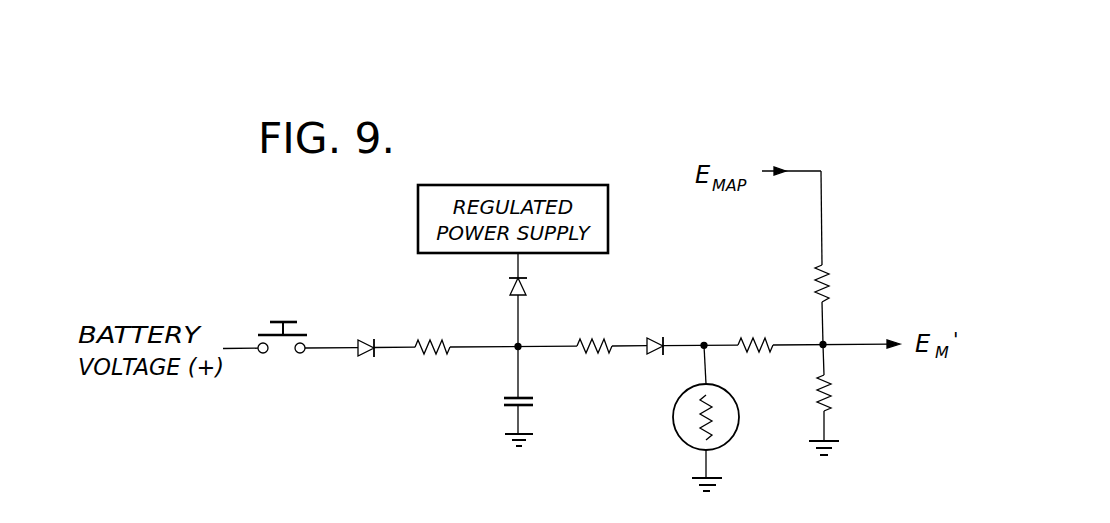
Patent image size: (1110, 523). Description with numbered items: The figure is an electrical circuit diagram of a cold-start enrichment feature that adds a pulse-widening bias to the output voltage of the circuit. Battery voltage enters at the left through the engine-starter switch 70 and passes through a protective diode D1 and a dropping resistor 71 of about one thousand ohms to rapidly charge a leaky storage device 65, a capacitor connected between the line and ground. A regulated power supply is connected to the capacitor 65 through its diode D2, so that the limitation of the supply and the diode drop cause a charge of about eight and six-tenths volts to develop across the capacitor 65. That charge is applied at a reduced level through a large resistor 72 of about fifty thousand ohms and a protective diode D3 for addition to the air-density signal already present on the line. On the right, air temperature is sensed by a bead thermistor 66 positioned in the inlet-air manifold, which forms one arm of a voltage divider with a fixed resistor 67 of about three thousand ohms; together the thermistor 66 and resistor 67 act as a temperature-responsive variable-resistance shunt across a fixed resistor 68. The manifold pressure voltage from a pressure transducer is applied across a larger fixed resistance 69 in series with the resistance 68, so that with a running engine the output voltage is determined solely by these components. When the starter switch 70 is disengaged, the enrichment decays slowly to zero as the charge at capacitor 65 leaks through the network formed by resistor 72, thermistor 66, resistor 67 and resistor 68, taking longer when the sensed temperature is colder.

The engine-starter switch 70 is at (298, 333).
The protective diode D1 is at (367, 358).
The dropping resistor 71 is at (437, 341).
The diode D2 is at (528, 289).
The leaky storage device 65 is at (538, 402).
The large resistor 72 is at (579, 341).
The protective diode D3 is at (651, 338).
The bead thermistor 66 is at (739, 405).
The resistor 67 is at (762, 338).
The larger fixed resistance 69 is at (830, 283).
The fixed resistor 68 is at (832, 393).